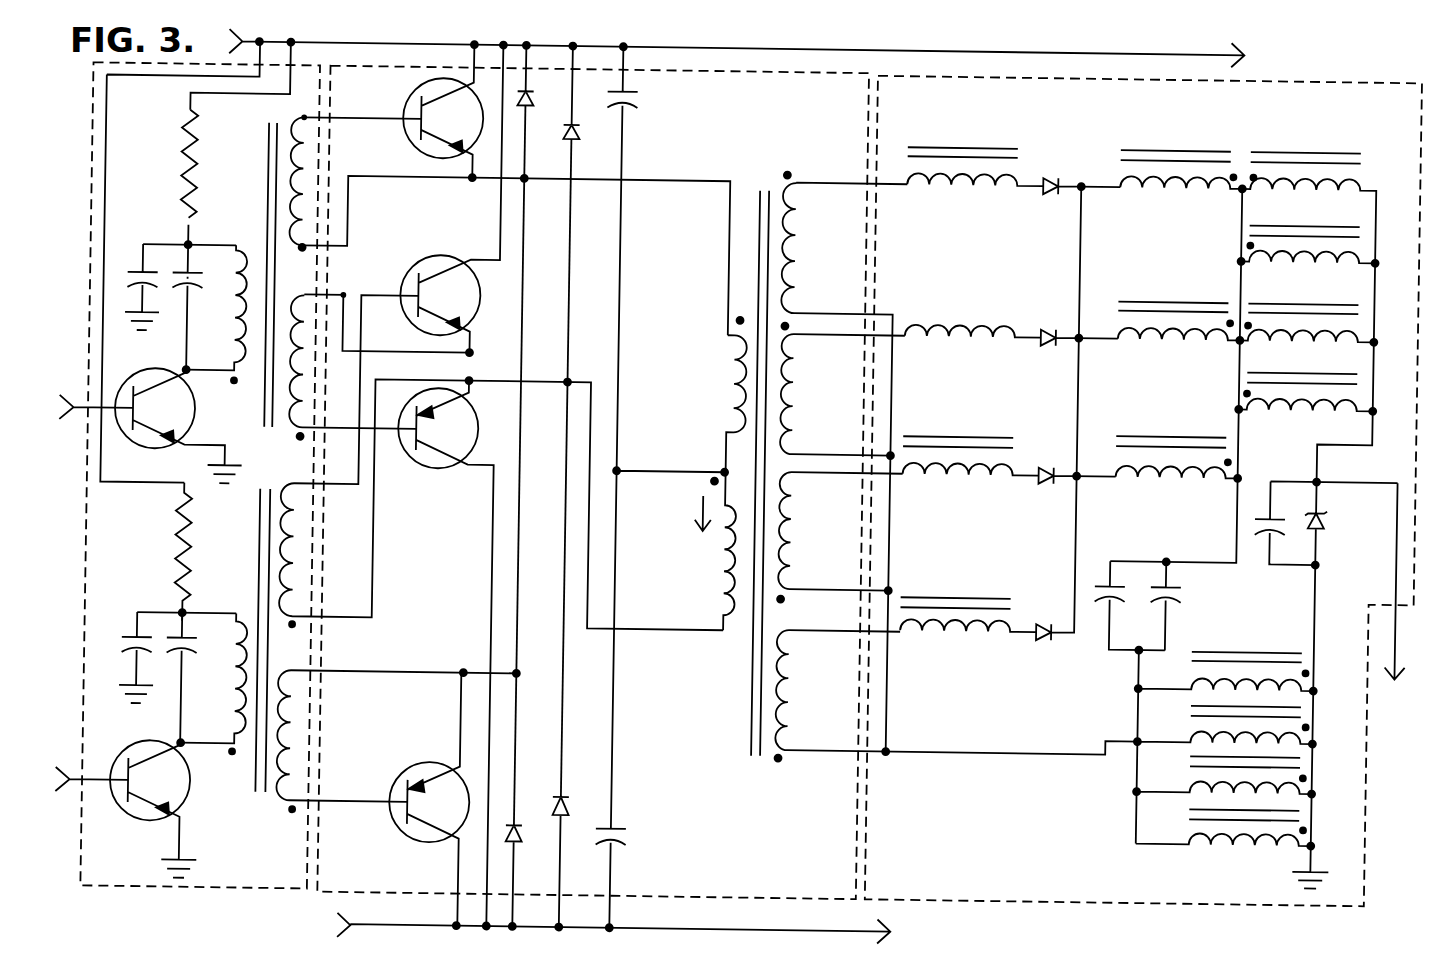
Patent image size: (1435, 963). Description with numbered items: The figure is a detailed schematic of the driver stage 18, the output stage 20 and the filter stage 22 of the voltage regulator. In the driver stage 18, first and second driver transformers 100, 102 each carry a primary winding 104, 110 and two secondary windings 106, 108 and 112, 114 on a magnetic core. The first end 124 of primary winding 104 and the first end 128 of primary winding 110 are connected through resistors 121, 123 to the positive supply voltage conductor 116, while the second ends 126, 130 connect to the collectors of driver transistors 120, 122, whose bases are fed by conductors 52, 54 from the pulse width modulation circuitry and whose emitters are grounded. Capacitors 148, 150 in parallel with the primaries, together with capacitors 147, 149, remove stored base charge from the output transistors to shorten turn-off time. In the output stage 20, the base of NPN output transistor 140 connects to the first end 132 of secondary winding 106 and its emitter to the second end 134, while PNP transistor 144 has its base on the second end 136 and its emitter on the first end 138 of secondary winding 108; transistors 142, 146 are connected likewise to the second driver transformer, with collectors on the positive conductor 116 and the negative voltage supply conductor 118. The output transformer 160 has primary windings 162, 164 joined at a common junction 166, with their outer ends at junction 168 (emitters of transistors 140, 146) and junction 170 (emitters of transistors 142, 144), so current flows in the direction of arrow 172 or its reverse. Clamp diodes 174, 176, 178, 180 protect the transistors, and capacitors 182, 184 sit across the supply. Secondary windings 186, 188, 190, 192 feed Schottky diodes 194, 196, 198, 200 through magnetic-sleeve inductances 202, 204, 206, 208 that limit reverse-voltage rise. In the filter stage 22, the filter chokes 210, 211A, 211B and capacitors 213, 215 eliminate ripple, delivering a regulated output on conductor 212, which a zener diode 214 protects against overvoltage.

The driver stage 18 is at (290, 886).
The output stage 20 is at (758, 888).
The filter stage 22 is at (1200, 888).
The conductor 52 is at (70, 393).
The conductor 54 is at (72, 766).
The first driver transformer 100 is at (266, 165).
The second driver transformer 102 is at (260, 563).
The primary winding 104 is at (240, 346).
The secondary winding 106 is at (306, 172).
The secondary winding 108 is at (312, 402).
The primary winding 110 is at (238, 744).
The secondary winding 112 is at (302, 568).
The secondary winding 114 is at (304, 732).
The positive supply voltage conductor 116 is at (382, 38).
The negative voltage supply conductor 118 is at (630, 920).
The first switch means 120 is at (178, 420).
The resistor 121 is at (192, 176).
The second switch means 122 is at (179, 792).
The resistor 123 is at (192, 516).
The first end of primary winding 124 is at (195, 240).
The second end of primary winding 126 is at (200, 376).
The first end of primary winding 128 is at (199, 610).
The second end of primary winding 130 is at (210, 740).
The first end of secondary winding 132 is at (300, 110).
The second end of secondary winding 134 is at (304, 246).
The second end of secondary winding 136 is at (281, 444).
The first end of secondary winding 138 is at (320, 310).
The output switch means 140 is at (462, 126).
The output switch means 142 is at (462, 303).
The output switch means 144 is at (462, 436).
The output switch means 146 is at (459, 810).
The capacitor 147 is at (126, 278).
The capacitor 148 is at (205, 282).
The capacitor 149 is at (119, 636).
The capacitor 150 is at (208, 648).
The output transformer 160 is at (772, 176).
The first primary winding 162 is at (738, 368).
The second primary winding 164 is at (733, 566).
The common junction 166 is at (626, 460).
The junction 168 is at (528, 176).
The junction 170 is at (570, 378).
The arrow 172 is at (710, 494).
The clamp diode 174 is at (536, 96).
The clamp diode 176 is at (538, 828).
The clamp diode 178 is at (584, 130).
The clamp diode 180 is at (566, 796).
The capacitor 182 is at (641, 96).
The capacitor 184 is at (641, 832).
The secondary winding 186 is at (794, 284).
The secondary winding 188 is at (792, 412).
The secondary winding 190 is at (790, 554).
The secondary winding 192 is at (788, 710).
The diode means 194 is at (1052, 160).
The diode means 196 is at (1050, 316).
The diode means 198 is at (1052, 476).
The diode means 200 is at (1050, 612).
The inductance 202 is at (970, 136).
The inductance 204 is at (966, 328).
The inductance 206 is at (1012, 452).
The inductance 208 is at (978, 584).
The filter choke 210 is at (1190, 399).
The filter choke 211A is at (1316, 287).
The filter choke 211B is at (1292, 742).
The conductor 212 is at (1406, 656).
The filter capacitor 213 is at (1150, 584).
The zener diode 214 is at (1336, 506).
The capacitor 215 is at (1262, 526).